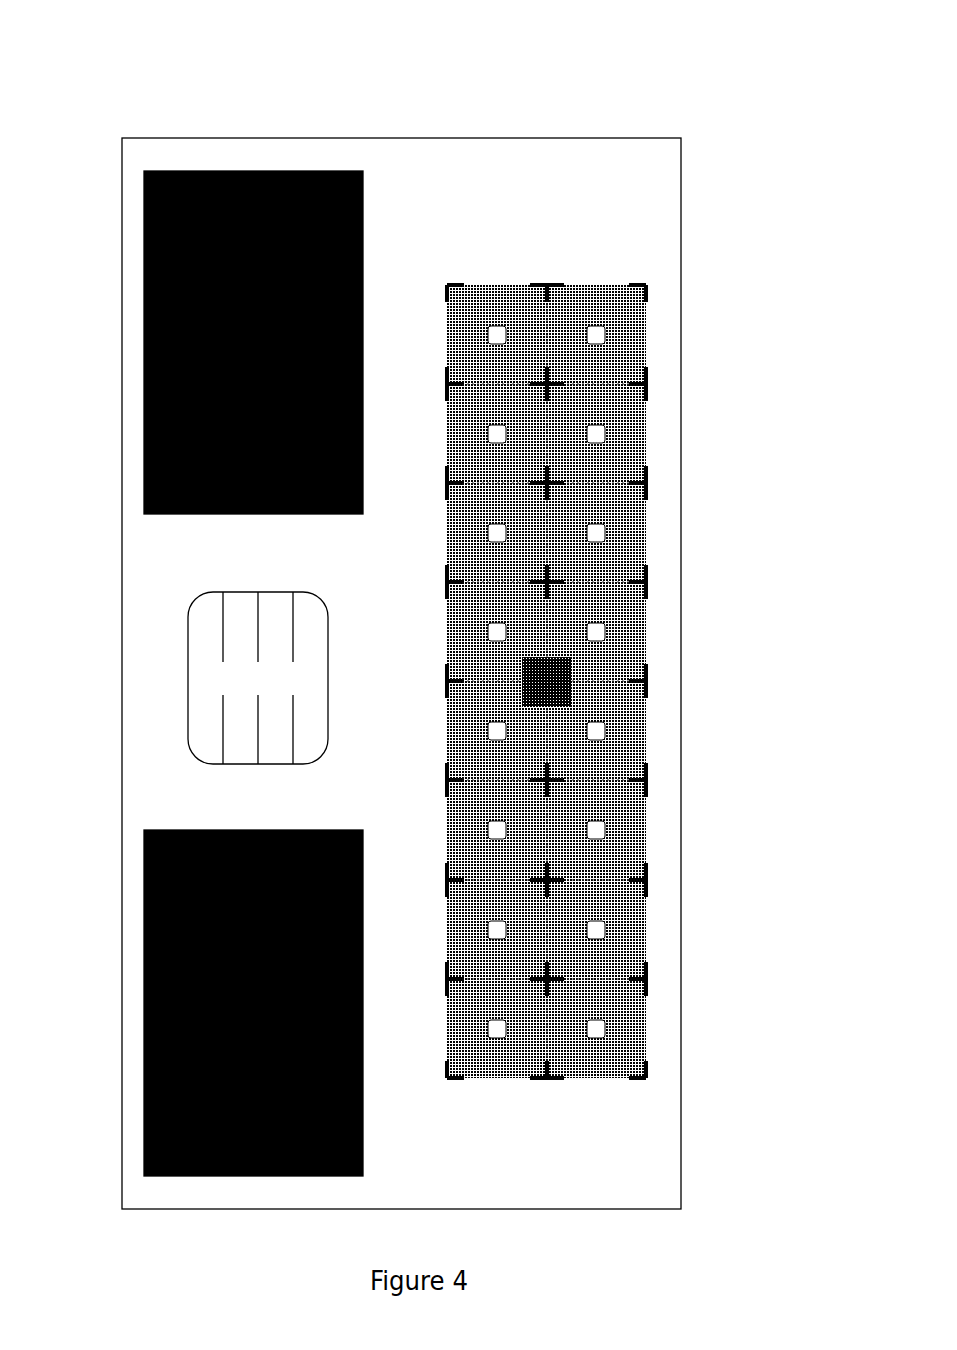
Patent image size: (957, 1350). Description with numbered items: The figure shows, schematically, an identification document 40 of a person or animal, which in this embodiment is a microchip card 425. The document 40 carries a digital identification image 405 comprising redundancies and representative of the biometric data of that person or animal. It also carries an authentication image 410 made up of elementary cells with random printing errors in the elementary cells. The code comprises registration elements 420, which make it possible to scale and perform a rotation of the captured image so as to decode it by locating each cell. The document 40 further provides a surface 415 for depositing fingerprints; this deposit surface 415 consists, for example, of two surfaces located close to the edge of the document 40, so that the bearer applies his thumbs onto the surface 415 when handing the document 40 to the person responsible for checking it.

The identification document 40 is at (191, 88).
The digital identification image 405 is at (635, 550).
The authentication image 410 is at (548, 682).
The surface for depositing fingerprints 415 is at (145, 482).
The registration elements 420 is at (647, 383).
The microchip card 425 is at (236, 680).